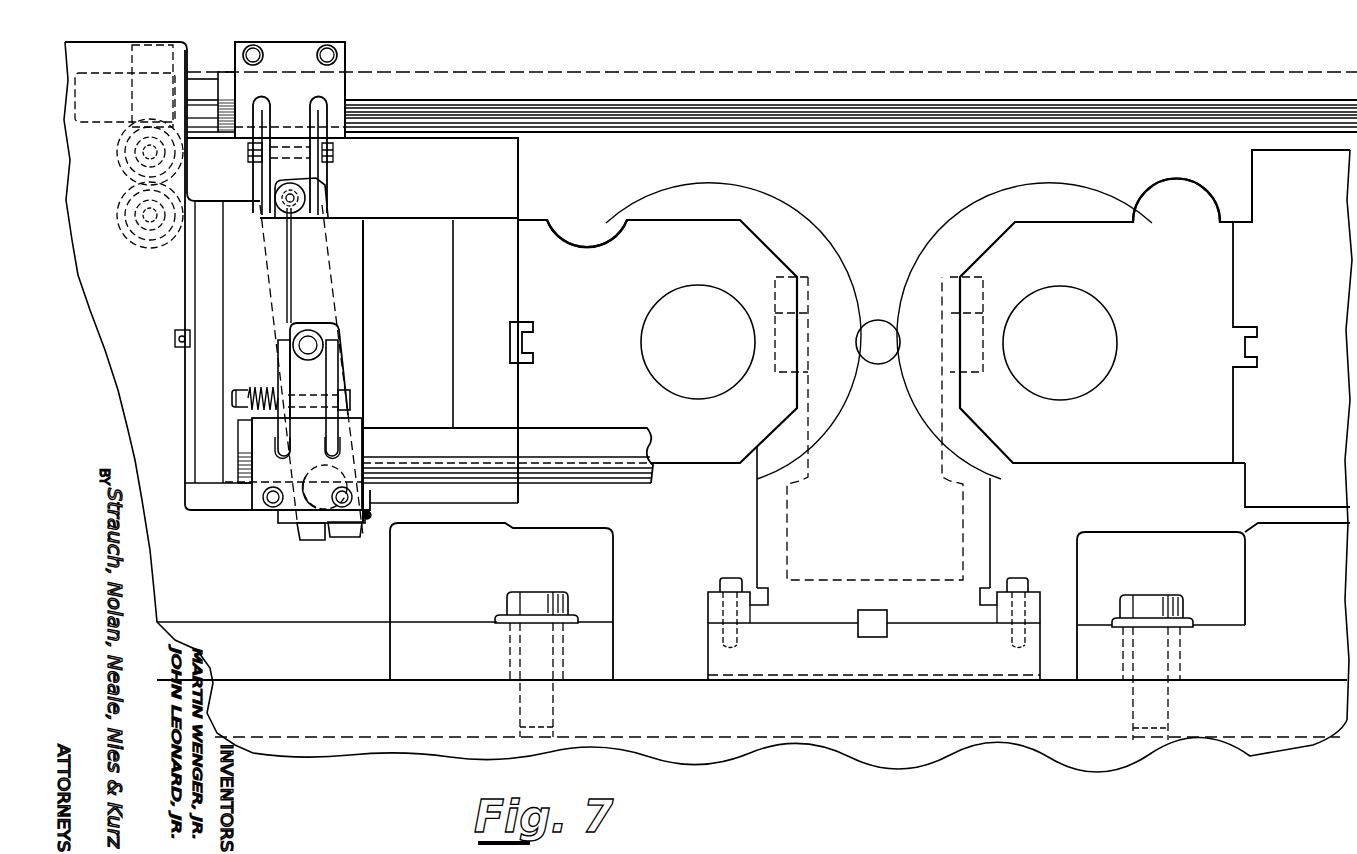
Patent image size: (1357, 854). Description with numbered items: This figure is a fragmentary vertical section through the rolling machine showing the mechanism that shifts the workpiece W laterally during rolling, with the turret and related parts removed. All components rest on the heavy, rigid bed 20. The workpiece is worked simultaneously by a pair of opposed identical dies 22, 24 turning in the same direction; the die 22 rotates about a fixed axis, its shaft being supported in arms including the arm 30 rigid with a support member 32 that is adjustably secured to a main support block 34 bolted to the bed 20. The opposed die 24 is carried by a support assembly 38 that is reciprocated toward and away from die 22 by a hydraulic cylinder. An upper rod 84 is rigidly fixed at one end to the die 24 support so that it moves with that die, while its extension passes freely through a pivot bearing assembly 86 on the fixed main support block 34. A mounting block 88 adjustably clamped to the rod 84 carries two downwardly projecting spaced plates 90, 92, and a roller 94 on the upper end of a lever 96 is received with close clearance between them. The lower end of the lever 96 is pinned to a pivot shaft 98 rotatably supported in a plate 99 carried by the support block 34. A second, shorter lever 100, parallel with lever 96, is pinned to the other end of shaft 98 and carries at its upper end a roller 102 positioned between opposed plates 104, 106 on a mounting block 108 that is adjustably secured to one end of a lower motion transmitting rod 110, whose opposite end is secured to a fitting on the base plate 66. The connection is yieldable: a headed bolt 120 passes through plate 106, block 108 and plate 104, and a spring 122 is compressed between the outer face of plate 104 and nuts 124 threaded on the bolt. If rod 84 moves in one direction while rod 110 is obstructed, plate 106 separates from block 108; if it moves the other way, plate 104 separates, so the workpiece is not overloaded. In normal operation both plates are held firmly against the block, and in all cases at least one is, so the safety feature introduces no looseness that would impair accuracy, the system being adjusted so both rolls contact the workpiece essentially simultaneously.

The bed 20 is at (358, 680).
The die 22 is at (780, 210).
The die 24 is at (963, 218).
The arm 30 is at (611, 240).
The support member 32 is at (428, 218).
The main support block 34 is at (239, 561).
The support assembly 38 is at (1160, 253).
The base plate 66 is at (940, 623).
The upper rod 84 is at (800, 72).
The pivot bearing assembly 86 is at (186, 56).
The mounting block 88 is at (345, 62).
The plate 90 is at (262, 178).
The plate 92 is at (319, 178).
The roller 94 is at (297, 213).
The lever 96 is at (335, 288).
The pivot shaft 98 is at (326, 462).
The plate 99 is at (365, 300).
The second lever 100 is at (347, 363).
The roller 102 is at (325, 319).
The plate 104 is at (280, 348).
The plate 106 is at (340, 353).
The mounting block 108 is at (362, 423).
The lower motion transmitting rod 110 is at (555, 430).
The headed bolt 120 is at (350, 380).
The spring 122 is at (268, 392).
The nuts 124 is at (240, 390).
The workpiece W is at (890, 320).